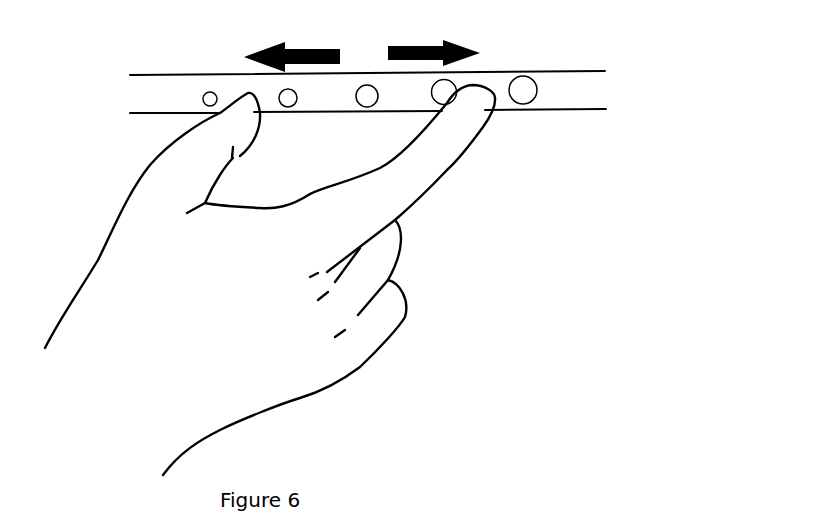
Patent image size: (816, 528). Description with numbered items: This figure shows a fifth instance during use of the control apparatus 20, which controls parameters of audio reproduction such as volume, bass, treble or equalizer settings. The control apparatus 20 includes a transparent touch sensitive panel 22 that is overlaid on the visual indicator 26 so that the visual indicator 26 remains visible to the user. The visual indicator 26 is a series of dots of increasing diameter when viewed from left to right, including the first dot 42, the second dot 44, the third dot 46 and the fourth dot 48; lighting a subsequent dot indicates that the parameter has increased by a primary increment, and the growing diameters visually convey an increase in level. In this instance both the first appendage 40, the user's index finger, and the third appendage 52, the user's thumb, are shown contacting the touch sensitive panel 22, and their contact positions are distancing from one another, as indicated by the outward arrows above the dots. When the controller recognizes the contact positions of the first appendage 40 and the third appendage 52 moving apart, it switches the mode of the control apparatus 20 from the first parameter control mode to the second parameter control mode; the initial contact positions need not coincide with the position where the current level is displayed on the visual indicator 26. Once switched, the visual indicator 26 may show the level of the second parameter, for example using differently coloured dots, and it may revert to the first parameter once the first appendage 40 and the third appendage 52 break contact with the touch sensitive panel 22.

The control apparatus 20 is at (112, 108).
The touch sensitive panel 22 is at (585, 88).
The visual indicator 26 is at (568, 103).
The first appendage 40 is at (418, 157).
The first dot 42 is at (215, 92).
The second dot 44 is at (290, 90).
The third dot 46 is at (373, 90).
The fourth dot 48 is at (447, 88).
The third appendage 52 is at (205, 140).